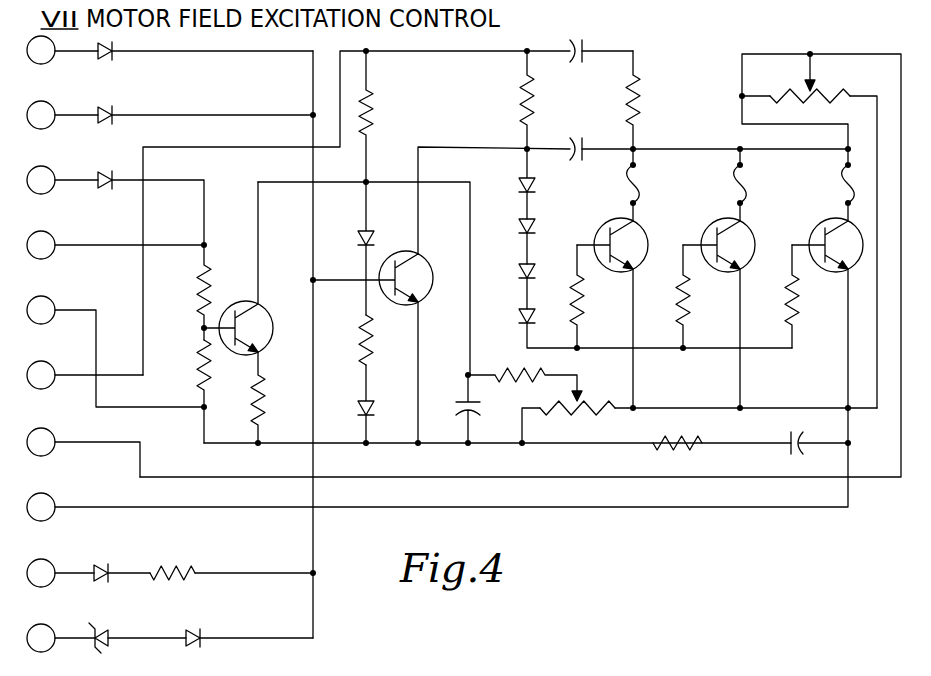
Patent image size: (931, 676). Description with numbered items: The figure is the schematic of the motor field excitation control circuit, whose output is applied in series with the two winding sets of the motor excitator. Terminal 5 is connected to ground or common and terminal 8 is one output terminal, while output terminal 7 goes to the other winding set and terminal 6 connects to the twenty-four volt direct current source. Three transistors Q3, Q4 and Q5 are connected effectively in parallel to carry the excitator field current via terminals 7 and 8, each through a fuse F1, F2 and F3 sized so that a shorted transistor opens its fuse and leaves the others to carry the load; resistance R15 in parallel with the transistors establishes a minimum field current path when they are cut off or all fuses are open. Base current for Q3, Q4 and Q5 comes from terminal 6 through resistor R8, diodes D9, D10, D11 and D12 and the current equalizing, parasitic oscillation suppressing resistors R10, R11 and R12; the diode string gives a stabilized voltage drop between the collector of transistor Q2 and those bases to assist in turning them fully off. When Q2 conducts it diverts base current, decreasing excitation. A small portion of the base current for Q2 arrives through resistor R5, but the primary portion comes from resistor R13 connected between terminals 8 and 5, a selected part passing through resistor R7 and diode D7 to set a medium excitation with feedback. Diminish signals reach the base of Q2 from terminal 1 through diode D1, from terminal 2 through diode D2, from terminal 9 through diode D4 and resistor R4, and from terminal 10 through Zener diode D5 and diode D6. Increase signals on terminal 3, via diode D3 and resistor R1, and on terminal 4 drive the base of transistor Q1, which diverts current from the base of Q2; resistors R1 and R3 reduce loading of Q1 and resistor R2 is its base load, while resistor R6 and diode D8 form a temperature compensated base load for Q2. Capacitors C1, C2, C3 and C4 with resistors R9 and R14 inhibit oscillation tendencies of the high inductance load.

The terminal 1 is at (170, 50).
The terminal 2 is at (170, 115).
The terminal 3 is at (115, 205).
The terminal 4 is at (115, 245).
The terminal 5 is at (115, 351).
The terminal 6 is at (85, 375).
The terminal 7 is at (83, 452).
The terminal 8 is at (437, 482).
The terminal 9 is at (171, 573).
The terminal 10 is at (170, 638).
The diode D1 is at (92, 61).
The diode D2 is at (92, 125).
The diode D3 is at (92, 190).
The diode D4 is at (88, 586).
The Zener diode D5 is at (86, 648).
The diode D6 is at (180, 651).
The diode D7 is at (348, 248).
The diode D8 is at (380, 404).
The diode D9 is at (512, 184).
The diode D10 is at (506, 239).
The diode D11 is at (506, 284).
The diode D12 is at (506, 315).
The resistor R1 is at (190, 292).
The resistor R2 is at (186, 373).
The resistor R3 is at (271, 397).
The resistor R4 is at (172, 587).
The resistor R5 is at (379, 116).
The resistor R6 is at (379, 340).
The resistor R7 is at (525, 386).
The resistor R8 is at (511, 100).
The resistor R9 is at (646, 100).
The resistor R10 is at (595, 296).
The resistor R11 is at (701, 296).
The resistor R12 is at (810, 296).
The resistor R13 is at (577, 421).
The resistor R14 is at (677, 455).
The resistance R15 is at (814, 78).
The capacitor C1 is at (577, 63).
The capacitor C2 is at (577, 139).
The capacitor C3 is at (455, 409).
The capacitor C4 is at (780, 453).
The transistor Q1 is at (253, 268).
The transistor Q2 is at (388, 347).
The transistor Q3 is at (628, 305).
The transistor Q4 is at (733, 305).
The transistor Q5 is at (827, 323).
The fuse F1 is at (619, 177).
The fuse F2 is at (726, 177).
The fuse F3 is at (833, 177).